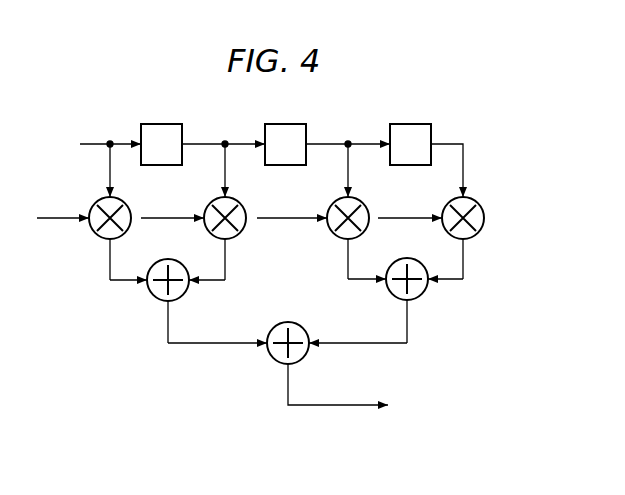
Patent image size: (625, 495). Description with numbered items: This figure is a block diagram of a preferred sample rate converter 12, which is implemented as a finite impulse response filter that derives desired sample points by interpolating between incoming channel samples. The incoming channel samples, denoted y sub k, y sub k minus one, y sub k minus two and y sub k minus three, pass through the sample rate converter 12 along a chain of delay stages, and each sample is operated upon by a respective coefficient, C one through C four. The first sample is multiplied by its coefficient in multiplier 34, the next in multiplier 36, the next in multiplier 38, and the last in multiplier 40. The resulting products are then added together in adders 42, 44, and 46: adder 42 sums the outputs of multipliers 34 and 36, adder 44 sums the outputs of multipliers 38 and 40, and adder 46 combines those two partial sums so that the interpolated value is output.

The sample rate converter 12 is at (156, 52).
The multiplier 34 is at (92, 237).
The multiplier 36 is at (243, 237).
The multiplier 38 is at (330, 237).
The multiplier 40 is at (482, 233).
The adder 42 is at (155, 302).
The adder 44 is at (423, 294).
The adder 46 is at (270, 362).